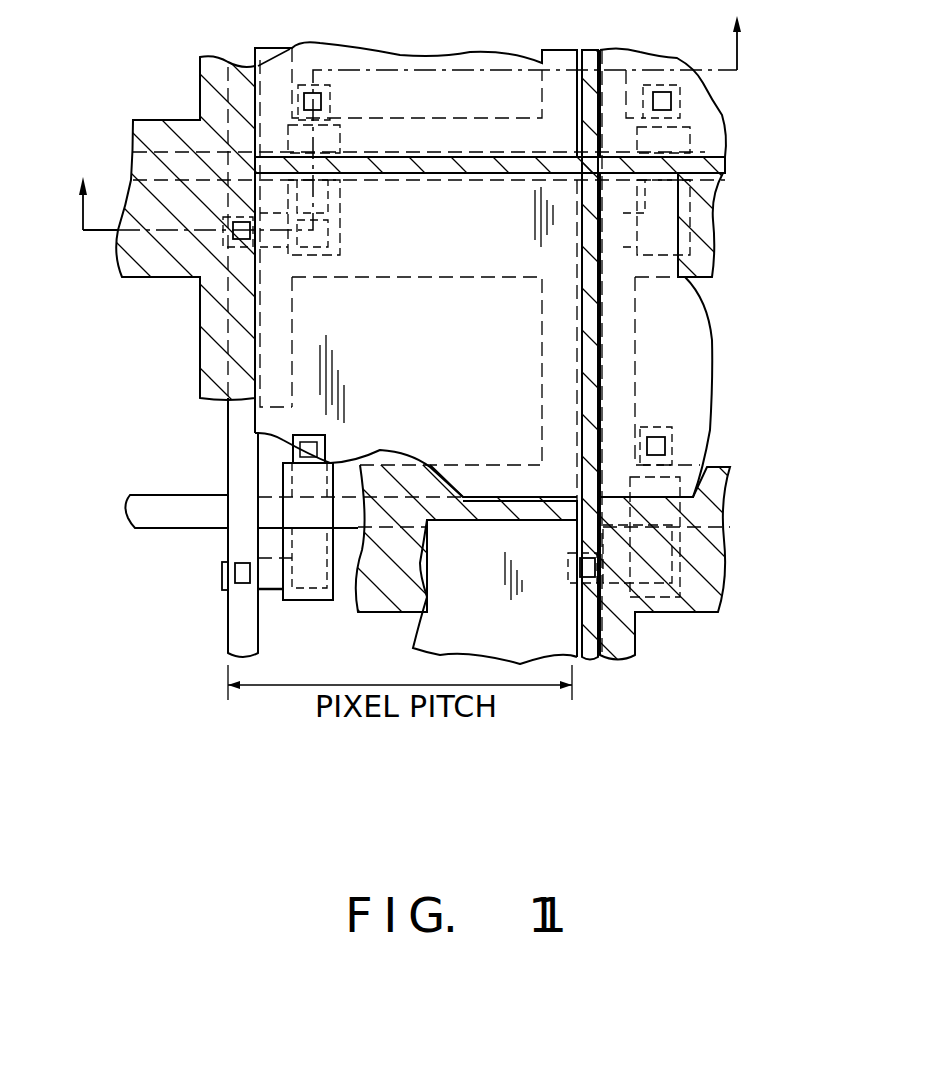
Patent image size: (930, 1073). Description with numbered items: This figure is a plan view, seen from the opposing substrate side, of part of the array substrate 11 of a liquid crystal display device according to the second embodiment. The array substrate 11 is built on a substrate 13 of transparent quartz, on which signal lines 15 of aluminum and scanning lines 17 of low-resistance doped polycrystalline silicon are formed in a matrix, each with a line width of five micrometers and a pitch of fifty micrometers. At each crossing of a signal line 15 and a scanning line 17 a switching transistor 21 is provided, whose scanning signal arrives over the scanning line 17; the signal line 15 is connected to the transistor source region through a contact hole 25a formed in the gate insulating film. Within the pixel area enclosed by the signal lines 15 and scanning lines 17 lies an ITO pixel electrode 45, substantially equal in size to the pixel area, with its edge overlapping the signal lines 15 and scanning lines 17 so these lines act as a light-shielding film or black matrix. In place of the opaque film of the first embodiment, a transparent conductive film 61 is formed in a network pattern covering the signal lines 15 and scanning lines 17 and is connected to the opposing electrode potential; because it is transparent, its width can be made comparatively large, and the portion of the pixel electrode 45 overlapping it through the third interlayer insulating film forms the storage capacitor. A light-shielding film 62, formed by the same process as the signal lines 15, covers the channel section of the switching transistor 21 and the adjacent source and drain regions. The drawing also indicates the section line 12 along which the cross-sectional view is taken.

The array substrate 11 is at (742, 383).
The section line XII-XII 12 is at (408, 119).
The substrate 13 is at (330, 622).
The signal line 15 is at (237, 538).
The scanning line 17 is at (150, 507).
The switching transistor 21 is at (277, 600).
The contact hole 25a is at (237, 573).
The pixel electrode 45 is at (253, 418).
The transparent conductive film 61 is at (200, 318).
The light-shielding film 62 is at (287, 478).